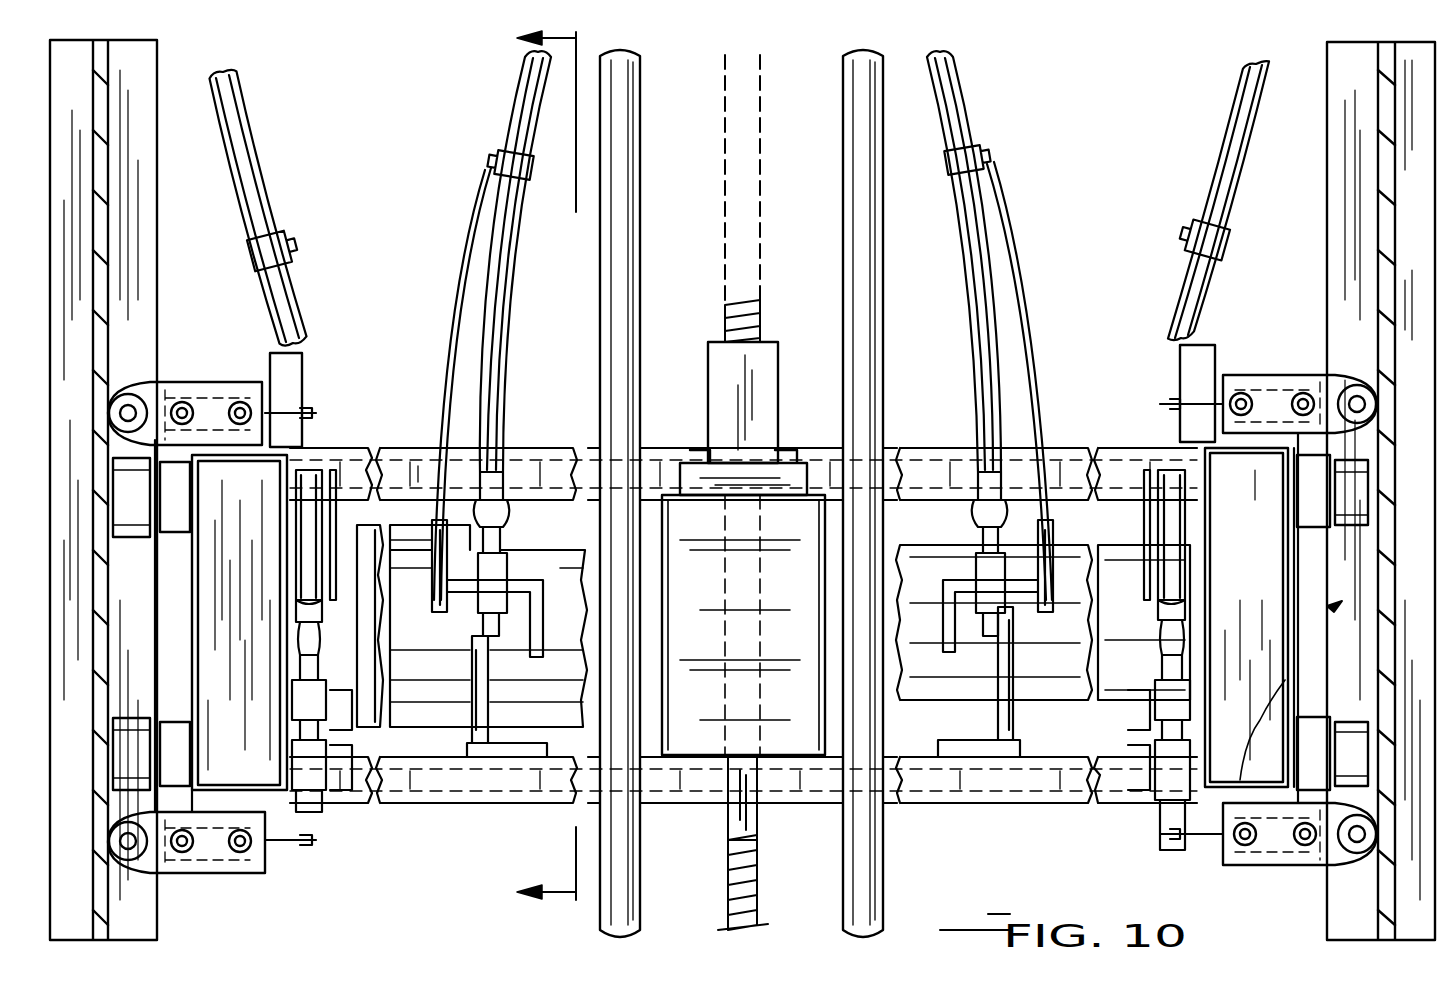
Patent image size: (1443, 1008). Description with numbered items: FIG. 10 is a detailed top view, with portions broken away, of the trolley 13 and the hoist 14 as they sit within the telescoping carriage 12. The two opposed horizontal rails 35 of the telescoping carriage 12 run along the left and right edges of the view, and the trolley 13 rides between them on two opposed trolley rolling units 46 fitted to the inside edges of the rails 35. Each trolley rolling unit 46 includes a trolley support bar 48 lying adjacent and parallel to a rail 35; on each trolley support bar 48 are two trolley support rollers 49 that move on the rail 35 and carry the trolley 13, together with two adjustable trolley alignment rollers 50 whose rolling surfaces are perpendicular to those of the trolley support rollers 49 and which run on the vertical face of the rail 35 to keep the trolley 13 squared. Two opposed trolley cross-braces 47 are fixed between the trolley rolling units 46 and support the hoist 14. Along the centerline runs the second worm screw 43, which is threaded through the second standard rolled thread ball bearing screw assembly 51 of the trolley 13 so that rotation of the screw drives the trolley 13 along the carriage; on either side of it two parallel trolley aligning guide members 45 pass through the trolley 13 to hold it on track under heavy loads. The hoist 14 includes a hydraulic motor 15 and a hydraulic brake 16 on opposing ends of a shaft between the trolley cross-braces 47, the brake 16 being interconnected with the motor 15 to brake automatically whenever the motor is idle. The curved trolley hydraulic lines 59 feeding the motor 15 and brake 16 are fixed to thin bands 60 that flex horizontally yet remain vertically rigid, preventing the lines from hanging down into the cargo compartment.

The telescoping carriage 12 is at (529, 464).
The trolley 13 is at (1338, 606).
The hoist 14 is at (925, 712).
The hydraulic motor 15 is at (1115, 668).
The hydraulic brake 16 is at (420, 702).
The rails 35 is at (1432, 249).
The second worm screw 43 is at (760, 890).
The trolley aligning guide members 45 is at (640, 145).
The trolley rolling units 46 is at (1212, 875).
The trolley cross-braces 47 is at (538, 448).
The trolley support bar 48 is at (1262, 525).
The trolley support rollers 49 is at (1345, 530).
The trolley alignment rollers 50 is at (1276, 385).
The second standard rolled thread ball bearing screw assembly 51 is at (778, 350).
The trolley hydraulic lines 59 is at (242, 186).
The thin bands 60 is at (458, 305).